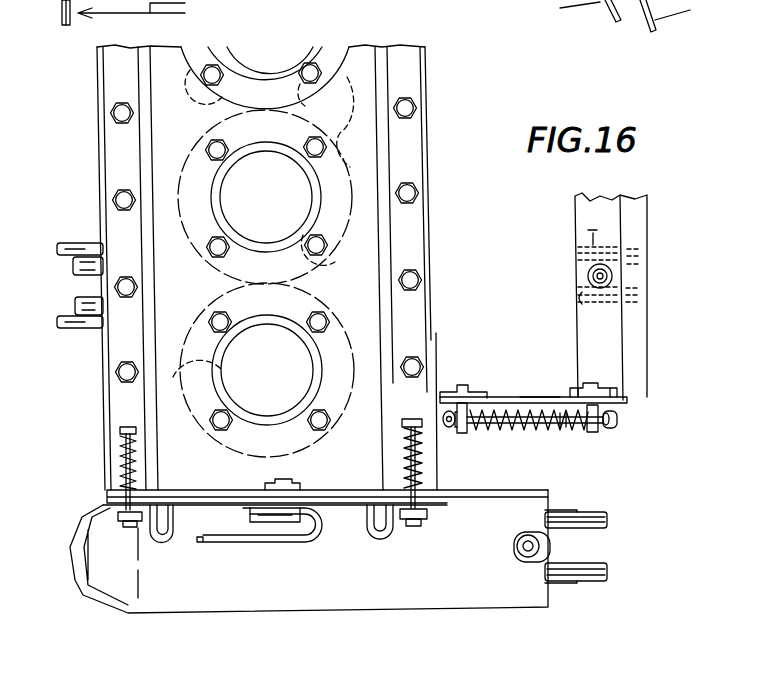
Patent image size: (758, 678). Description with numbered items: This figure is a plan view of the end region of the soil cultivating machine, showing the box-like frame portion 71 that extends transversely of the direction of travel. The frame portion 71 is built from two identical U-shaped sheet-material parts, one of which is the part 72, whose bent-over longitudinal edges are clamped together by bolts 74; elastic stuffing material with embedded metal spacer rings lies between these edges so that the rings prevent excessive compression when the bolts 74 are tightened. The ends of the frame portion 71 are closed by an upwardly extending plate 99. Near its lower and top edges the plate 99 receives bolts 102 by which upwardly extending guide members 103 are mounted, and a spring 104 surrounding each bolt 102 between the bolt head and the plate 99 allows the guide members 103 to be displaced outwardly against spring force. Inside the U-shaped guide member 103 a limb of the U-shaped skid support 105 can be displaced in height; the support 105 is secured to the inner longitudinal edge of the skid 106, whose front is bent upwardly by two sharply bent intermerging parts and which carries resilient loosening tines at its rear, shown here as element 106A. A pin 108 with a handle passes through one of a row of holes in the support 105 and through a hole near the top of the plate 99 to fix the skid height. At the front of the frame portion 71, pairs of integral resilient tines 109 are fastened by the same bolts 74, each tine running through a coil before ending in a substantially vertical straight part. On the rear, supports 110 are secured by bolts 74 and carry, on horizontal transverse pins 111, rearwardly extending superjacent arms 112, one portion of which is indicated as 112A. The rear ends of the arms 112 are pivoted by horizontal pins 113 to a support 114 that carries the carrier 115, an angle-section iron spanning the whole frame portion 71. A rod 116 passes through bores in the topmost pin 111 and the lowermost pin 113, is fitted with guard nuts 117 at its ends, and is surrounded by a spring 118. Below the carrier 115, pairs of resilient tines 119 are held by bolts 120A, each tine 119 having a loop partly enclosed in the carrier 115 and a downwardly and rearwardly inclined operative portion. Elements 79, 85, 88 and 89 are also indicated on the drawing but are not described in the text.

The frame portion 71 is at (99, 404).
The U-shaped part 72 is at (356, 50).
The bolts 74 is at (122, 189).
The bolts 79 is at (203, 108).
The passage outline 85 is at (349, 122).
The cylinder boss 88 is at (262, 52).
The cylinder bore rings 89 is at (302, 85).
The plate 99 is at (181, 495).
The bolt 102 is at (121, 430).
The guide member 103 is at (160, 543).
The spring 104 is at (137, 452).
The skid support 105 is at (348, 507).
The skid 106 is at (503, 594).
The pads 106A is at (607, 520).
The pin 108 is at (268, 478).
The tines 109 is at (83, 222).
The supports 110 is at (460, 385).
The horizontal pins 111 is at (460, 434).
The arms 112 is at (495, 397).
The bracket plate end 112A is at (545, 391).
The horizontal pins 113 is at (595, 432).
The support 114 is at (603, 385).
The carrier 115 is at (582, 212).
The rod 116 is at (512, 430).
The guard nuts 117 is at (618, 418).
The spring 118 is at (558, 431).
The tines 119 is at (577, 243).
The bolts 120A is at (589, 279).